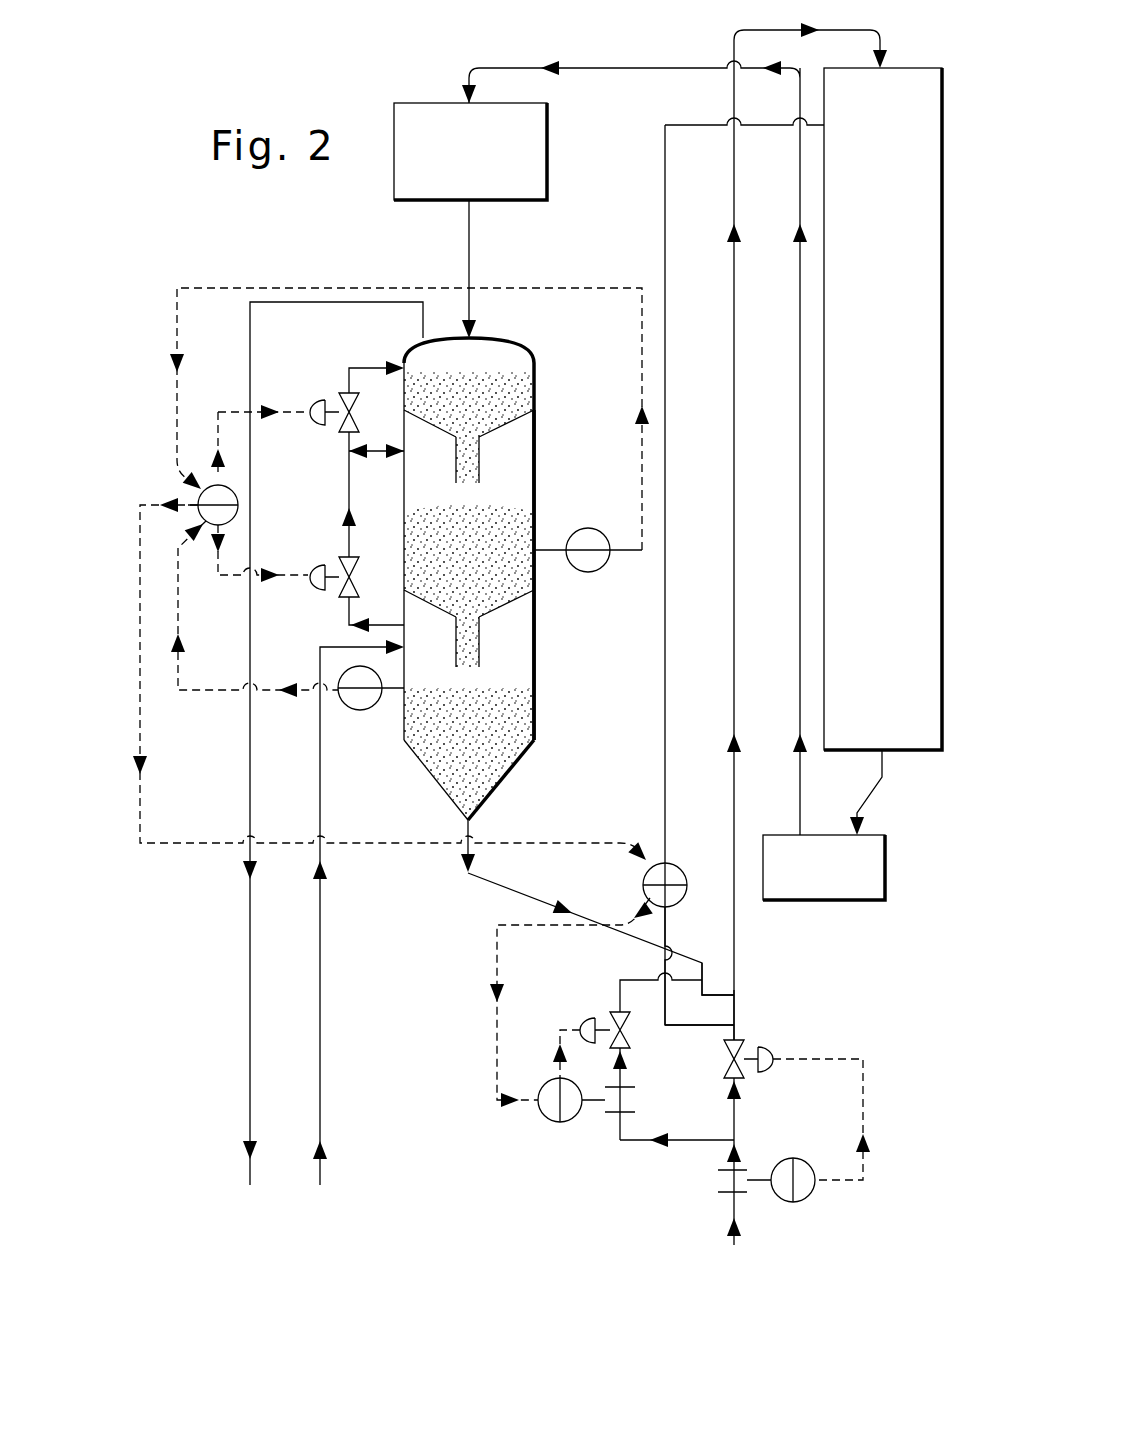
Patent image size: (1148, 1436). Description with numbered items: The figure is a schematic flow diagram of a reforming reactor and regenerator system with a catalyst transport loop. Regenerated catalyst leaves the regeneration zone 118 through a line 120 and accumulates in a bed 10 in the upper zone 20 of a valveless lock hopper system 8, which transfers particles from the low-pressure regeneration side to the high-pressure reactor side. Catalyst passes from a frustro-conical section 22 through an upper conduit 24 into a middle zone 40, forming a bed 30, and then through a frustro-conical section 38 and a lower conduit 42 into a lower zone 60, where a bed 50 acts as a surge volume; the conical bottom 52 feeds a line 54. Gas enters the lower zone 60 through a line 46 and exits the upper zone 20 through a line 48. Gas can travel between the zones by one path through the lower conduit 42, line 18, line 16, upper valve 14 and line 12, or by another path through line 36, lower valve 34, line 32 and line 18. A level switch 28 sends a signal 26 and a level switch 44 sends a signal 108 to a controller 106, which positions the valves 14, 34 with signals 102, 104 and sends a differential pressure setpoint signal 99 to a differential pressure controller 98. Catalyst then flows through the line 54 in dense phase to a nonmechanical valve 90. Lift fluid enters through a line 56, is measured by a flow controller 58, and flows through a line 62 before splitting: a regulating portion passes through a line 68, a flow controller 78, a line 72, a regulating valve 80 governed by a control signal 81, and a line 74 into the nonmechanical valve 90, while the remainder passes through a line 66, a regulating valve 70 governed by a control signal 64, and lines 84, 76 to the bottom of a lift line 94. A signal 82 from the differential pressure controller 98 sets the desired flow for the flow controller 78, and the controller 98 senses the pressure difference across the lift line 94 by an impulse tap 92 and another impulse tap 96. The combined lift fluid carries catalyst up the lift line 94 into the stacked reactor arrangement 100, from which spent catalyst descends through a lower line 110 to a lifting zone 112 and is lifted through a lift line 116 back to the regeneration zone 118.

The valveless lock hopper system 8 is at (548, 381).
The bed 10 is at (482, 403).
The line 12 is at (372, 364).
The upper valve 14 is at (340, 394).
The line 16 is at (340, 448).
The line 18 is at (378, 458).
The upper zone 20 is at (512, 345).
The frustro-conical section 22 is at (432, 428).
The upper conduit 24 is at (481, 460).
The signal 26 is at (244, 287).
The level switch 28 is at (600, 572).
The bed 30 is at (482, 586).
The line 32 is at (347, 490).
The lower valve 34 is at (338, 558).
The line 36 is at (344, 606).
The frustro-conical section 38 is at (432, 610).
The middle zone 40 is at (536, 455).
The lower conduit 42 is at (481, 643).
The level switch 44 is at (366, 710).
The line 46 is at (322, 938).
The line 48 is at (248, 752).
The bed 50 is at (482, 756).
The conical bottom 52 is at (436, 792).
The line 54 is at (514, 890).
The line 56 is at (732, 1208).
The flow controller 58 is at (812, 1202).
The lower zone 60 is at (536, 652).
The line 62 is at (730, 1146).
The control signal 64 is at (866, 1120).
The line 66 is at (738, 1114).
The line 68 is at (710, 1138).
The regulating valve 70 is at (778, 1052).
The line 72 is at (624, 1086).
The line 74 is at (650, 978).
The line 76 is at (740, 1010).
The flow controller 78 is at (554, 1120).
The regulating valve 80 is at (590, 1028).
The control signal 81 is at (556, 1036).
The signal 82 is at (494, 1010).
The line 84 is at (740, 1032).
The nonmechanical valve 90 is at (748, 985).
The impulse tap 92 is at (668, 930).
The lift line 94 is at (792, 18).
The impulse tap 96 is at (663, 192).
The differential pressure controller 98 is at (676, 870).
The differential pressure setpoint signal 99 is at (142, 798).
The stacked reactor arrangement 100 is at (863, 470).
The signal 102 is at (292, 410).
The signal 104 is at (232, 580).
The controller 106 is at (200, 494).
The signal 108 is at (222, 690).
The lower line 110 is at (870, 806).
The lifting zone 112 is at (803, 880).
The lift line 116 is at (530, 60).
The regeneration zone 118 is at (449, 165).
The line 120 is at (466, 243).